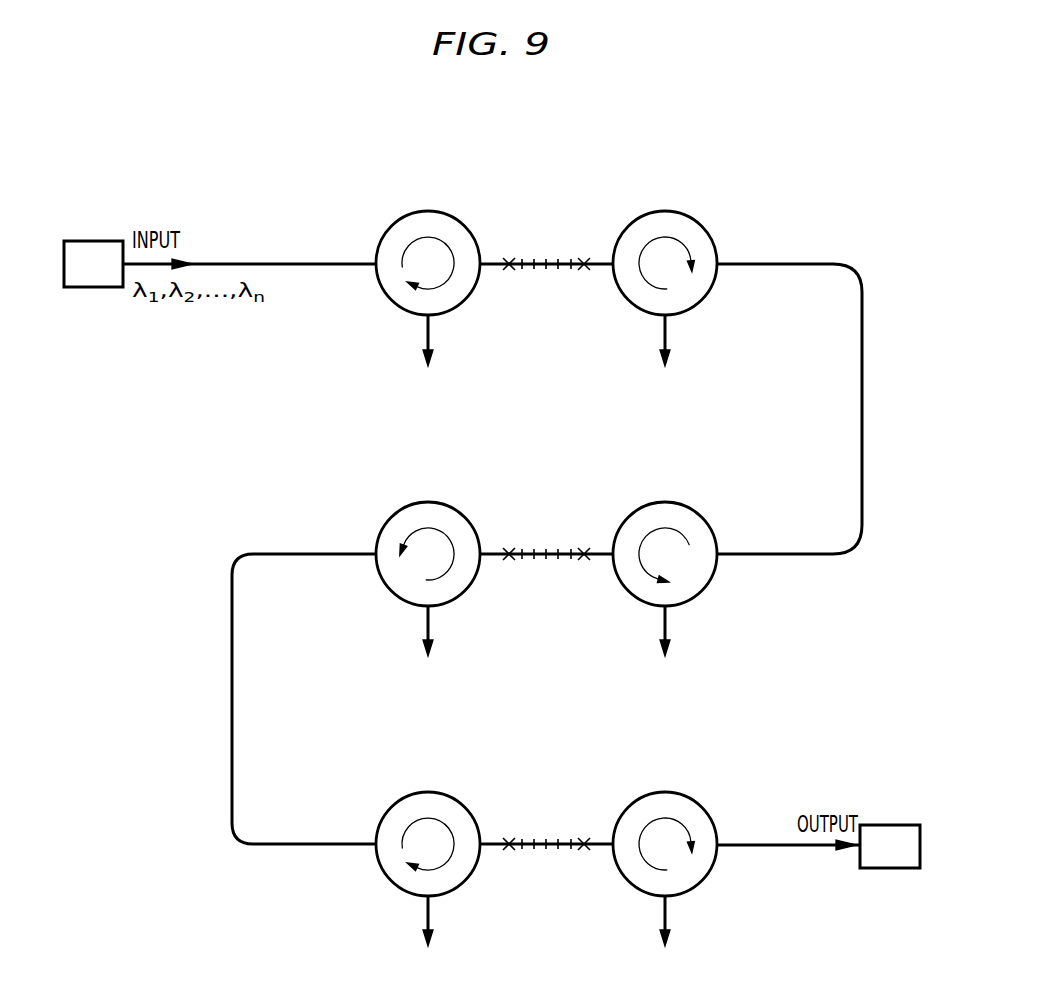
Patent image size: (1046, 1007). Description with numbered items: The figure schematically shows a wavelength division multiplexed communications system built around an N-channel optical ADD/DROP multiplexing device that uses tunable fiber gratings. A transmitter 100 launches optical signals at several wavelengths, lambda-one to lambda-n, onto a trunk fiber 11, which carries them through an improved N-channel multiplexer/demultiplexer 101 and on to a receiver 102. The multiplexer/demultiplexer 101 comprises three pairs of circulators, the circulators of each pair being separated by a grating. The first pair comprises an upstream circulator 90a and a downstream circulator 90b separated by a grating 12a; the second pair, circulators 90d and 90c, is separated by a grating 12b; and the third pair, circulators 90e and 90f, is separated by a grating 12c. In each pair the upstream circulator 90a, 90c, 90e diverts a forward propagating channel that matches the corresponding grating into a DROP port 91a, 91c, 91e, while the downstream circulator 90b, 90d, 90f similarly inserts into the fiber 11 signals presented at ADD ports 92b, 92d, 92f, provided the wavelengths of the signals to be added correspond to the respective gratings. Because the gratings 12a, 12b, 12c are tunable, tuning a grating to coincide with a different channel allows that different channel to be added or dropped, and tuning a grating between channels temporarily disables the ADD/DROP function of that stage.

The transmitter 100 is at (93, 264).
The receiver 102 is at (890, 846).
The trunk fiber 11 is at (268, 263).
The N-channel multiplexer/demultiplexer 101 is at (510, 151).
The grating 12a is at (558, 208).
The grating 12b is at (558, 498).
The grating 12c is at (558, 788).
The upstream circulator 90a is at (391, 226).
The downstream circulator 90b is at (702, 226).
The upstream circulator 90c is at (702, 517).
The downstream circulator 90d is at (391, 517).
The upstream circulator 90e is at (391, 807).
The downstream circulator 90f is at (702, 807).
The DROP port 91a is at (427, 358).
The DROP port 91c is at (663, 648).
The DROP port 91e is at (424, 938).
The ADD port 92b is at (665, 358).
The ADD port 92d is at (426, 648).
The ADD port 92f is at (663, 938).